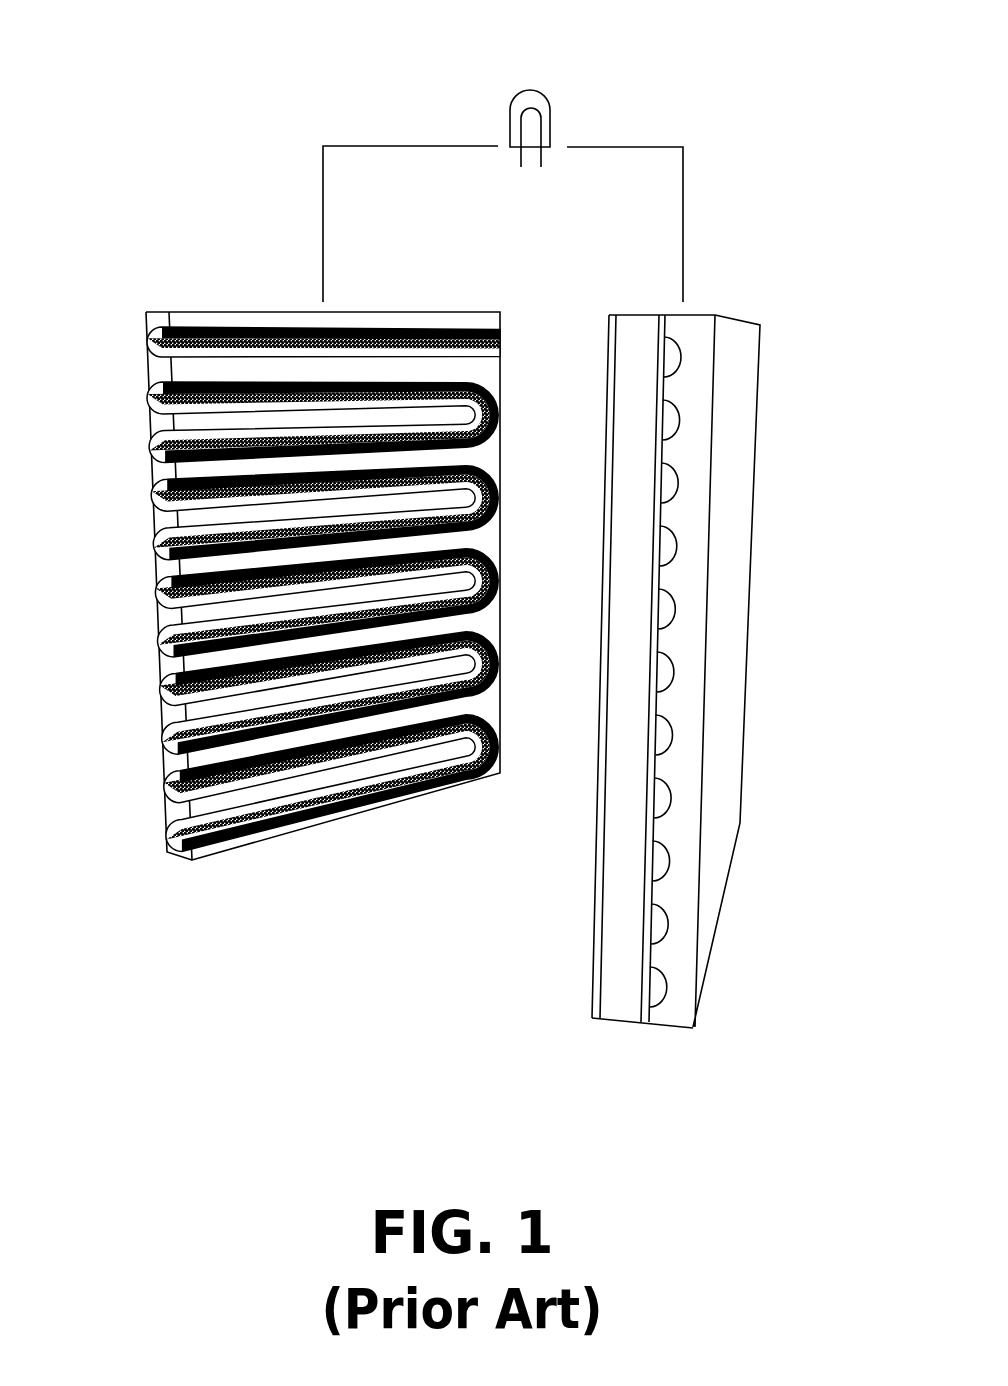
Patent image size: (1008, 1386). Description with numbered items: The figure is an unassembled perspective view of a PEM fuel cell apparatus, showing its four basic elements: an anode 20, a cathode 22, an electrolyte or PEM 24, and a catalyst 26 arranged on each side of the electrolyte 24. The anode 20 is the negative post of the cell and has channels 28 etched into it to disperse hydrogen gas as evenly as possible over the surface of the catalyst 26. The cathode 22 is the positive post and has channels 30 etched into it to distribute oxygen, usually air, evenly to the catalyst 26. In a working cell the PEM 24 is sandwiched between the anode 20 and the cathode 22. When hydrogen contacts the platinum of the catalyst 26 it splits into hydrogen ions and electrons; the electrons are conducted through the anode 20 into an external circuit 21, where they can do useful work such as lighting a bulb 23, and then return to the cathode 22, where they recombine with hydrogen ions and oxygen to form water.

The anode 20 is at (173, 677).
The external circuit 21 is at (380, 143).
The cathode 22 is at (722, 655).
The bulb 23 is at (510, 107).
The electrolyte (PEM) 24 is at (628, 702).
The catalyst 26 is at (642, 1010).
The channels 28 is at (175, 493).
The channels 30 is at (682, 358).